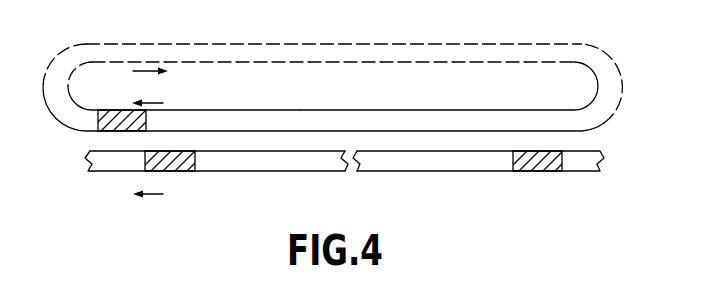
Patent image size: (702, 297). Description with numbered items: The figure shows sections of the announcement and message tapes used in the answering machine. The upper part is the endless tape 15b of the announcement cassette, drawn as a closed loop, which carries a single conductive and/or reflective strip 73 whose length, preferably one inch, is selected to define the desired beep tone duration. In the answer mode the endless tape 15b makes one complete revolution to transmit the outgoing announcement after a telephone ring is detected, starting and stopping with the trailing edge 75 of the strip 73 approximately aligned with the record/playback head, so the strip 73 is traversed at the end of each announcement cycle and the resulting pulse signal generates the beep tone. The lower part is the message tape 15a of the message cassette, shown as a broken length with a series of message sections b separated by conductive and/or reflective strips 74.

The message tape 15a is at (415, 152).
The endless tape 15b is at (302, 110).
The conductive and/or reflective strip 73 is at (118, 110).
The conductive and/or reflective strips 74 is at (177, 170).
The trailing edge 75 is at (150, 117).
The message sections b is at (145, 173).